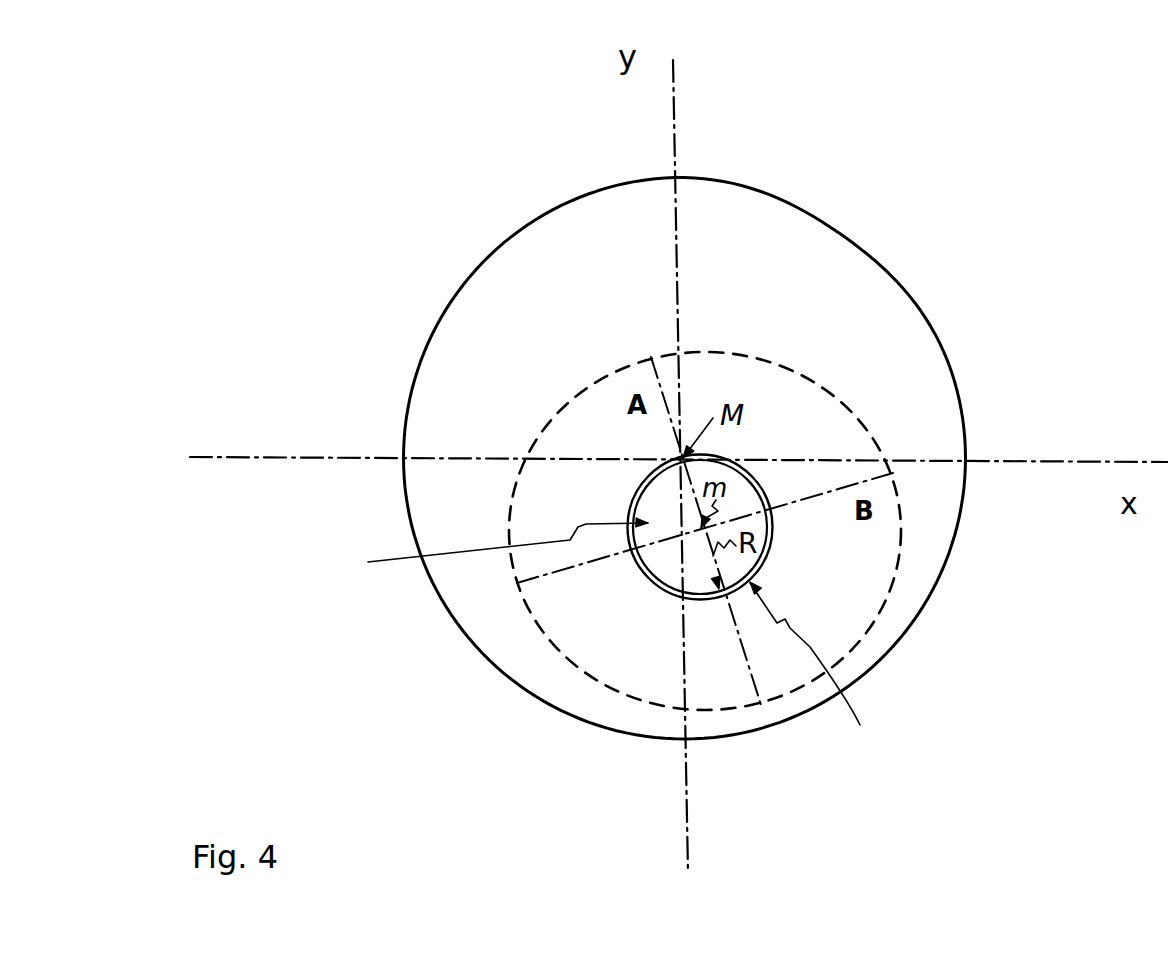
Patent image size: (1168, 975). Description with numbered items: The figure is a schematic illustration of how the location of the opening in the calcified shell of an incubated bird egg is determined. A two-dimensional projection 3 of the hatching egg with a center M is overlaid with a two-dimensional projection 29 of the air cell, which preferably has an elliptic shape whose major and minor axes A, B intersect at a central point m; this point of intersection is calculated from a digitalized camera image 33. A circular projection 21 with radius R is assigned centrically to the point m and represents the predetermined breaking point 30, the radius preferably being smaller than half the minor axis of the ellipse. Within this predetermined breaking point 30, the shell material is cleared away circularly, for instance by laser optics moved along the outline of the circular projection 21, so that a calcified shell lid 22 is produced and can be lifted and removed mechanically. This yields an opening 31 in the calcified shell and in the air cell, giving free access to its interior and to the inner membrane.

The two-dimensional projection of the hatching egg 3 is at (814, 248).
The digitalized camera image 33 is at (1038, 192).
The two-dimensional projection of the air cell 29 is at (857, 596).
The circular projection 21 is at (665, 567).
The opening 31 is at (631, 602).
The calcified shell lid 22 is at (486, 552).
The predetermined breaking point 30 is at (820, 674).